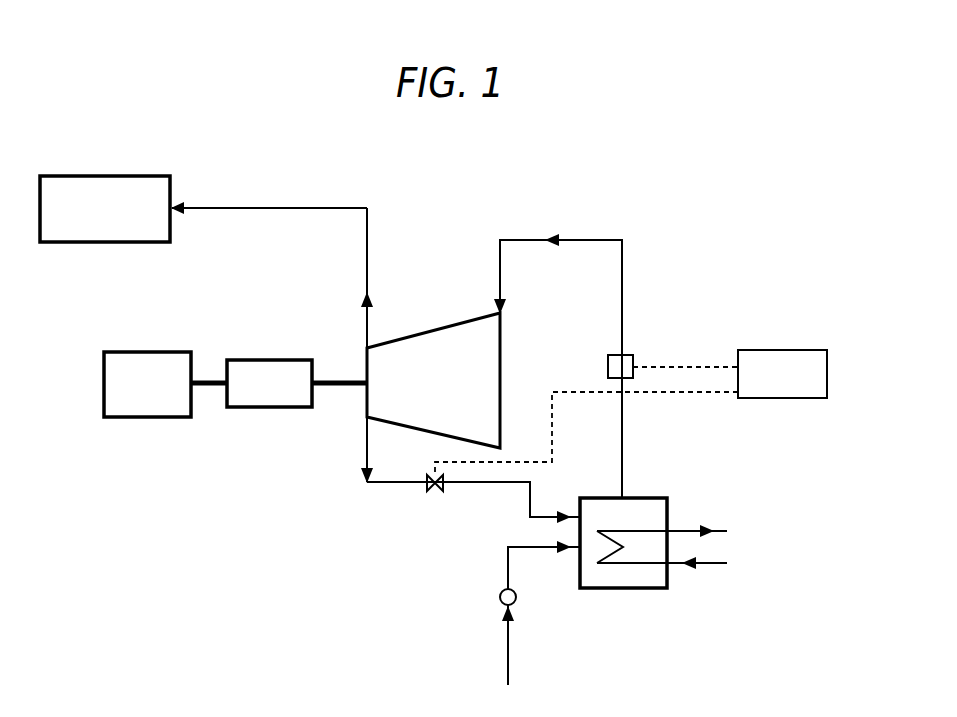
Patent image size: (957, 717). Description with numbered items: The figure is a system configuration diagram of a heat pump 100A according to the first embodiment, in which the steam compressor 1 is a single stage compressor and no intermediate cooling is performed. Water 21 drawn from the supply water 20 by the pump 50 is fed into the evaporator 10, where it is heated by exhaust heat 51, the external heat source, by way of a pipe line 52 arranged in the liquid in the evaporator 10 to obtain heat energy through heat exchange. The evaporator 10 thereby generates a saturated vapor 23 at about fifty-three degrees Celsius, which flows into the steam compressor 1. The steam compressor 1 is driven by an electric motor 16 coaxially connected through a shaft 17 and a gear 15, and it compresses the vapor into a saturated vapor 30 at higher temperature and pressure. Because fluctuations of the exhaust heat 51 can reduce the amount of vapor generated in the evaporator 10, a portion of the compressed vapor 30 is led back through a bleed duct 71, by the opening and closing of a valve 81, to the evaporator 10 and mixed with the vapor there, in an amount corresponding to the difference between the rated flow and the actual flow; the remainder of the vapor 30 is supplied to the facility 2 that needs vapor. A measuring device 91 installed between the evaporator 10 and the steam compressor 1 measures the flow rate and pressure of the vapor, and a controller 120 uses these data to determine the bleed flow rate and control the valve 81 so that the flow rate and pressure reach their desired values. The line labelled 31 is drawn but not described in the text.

The heat pump 100A is at (363, 634).
The steam compressor 1 is at (460, 340).
The facility 2 is at (104, 176).
The evaporator 10 is at (627, 589).
The gear 15 is at (263, 408).
The electric motor 16 is at (128, 418).
The shaft 17 is at (333, 381).
The supply water 20 is at (496, 645).
The water 21 is at (544, 565).
The saturated vapor 23 is at (558, 366).
The saturated vapor 30 is at (272, 330).
The discharge line 31 is at (226, 211).
The pump 50 is at (514, 601).
The exhaust heat 51 is at (662, 575).
The pipe line 52 is at (662, 520).
The bleed duct 71 is at (373, 485).
The valve 81 is at (434, 492).
The measuring device 91 is at (633, 358).
The controller 120 is at (790, 398).